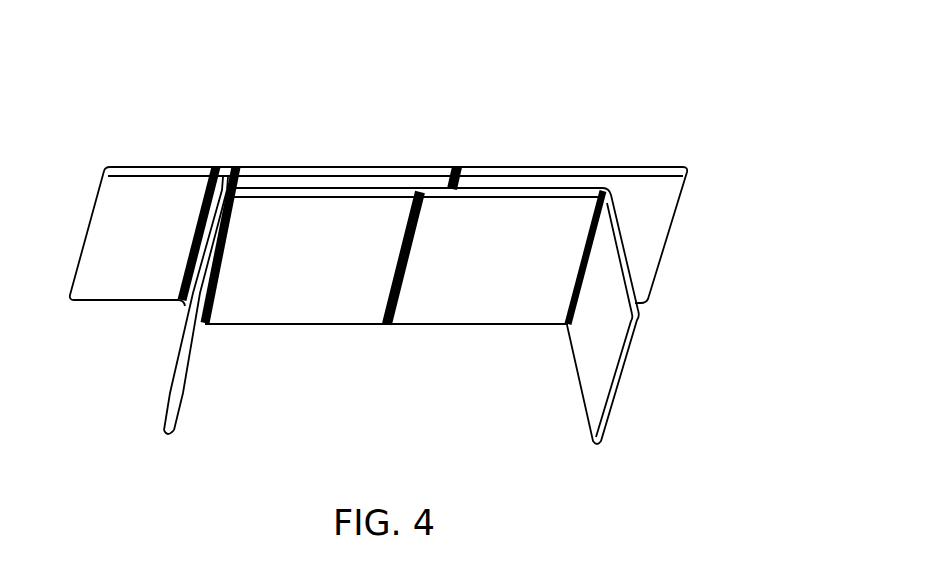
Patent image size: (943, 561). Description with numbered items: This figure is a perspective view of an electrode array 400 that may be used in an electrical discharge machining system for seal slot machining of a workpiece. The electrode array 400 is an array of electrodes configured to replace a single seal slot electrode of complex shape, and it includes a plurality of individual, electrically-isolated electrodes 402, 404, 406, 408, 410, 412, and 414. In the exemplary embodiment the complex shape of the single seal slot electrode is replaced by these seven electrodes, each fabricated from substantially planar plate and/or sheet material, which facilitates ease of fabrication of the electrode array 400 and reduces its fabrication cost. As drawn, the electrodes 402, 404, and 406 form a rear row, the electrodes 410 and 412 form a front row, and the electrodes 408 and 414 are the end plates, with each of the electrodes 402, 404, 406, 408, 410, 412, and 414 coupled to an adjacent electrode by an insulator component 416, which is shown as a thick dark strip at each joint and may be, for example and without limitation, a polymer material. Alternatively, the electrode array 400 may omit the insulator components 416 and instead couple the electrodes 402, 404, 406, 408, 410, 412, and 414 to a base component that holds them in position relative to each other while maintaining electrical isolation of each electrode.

The electrode array 400 is at (693, 57).
The electrode 402 is at (148, 167).
The electrode 404 is at (341, 167).
The electrode 406 is at (596, 167).
The electrode 408 is at (177, 418).
The electrode 410 is at (304, 326).
The electrode 412 is at (466, 326).
The electrode 414 is at (613, 418).
The insulator component 416 is at (247, 188).